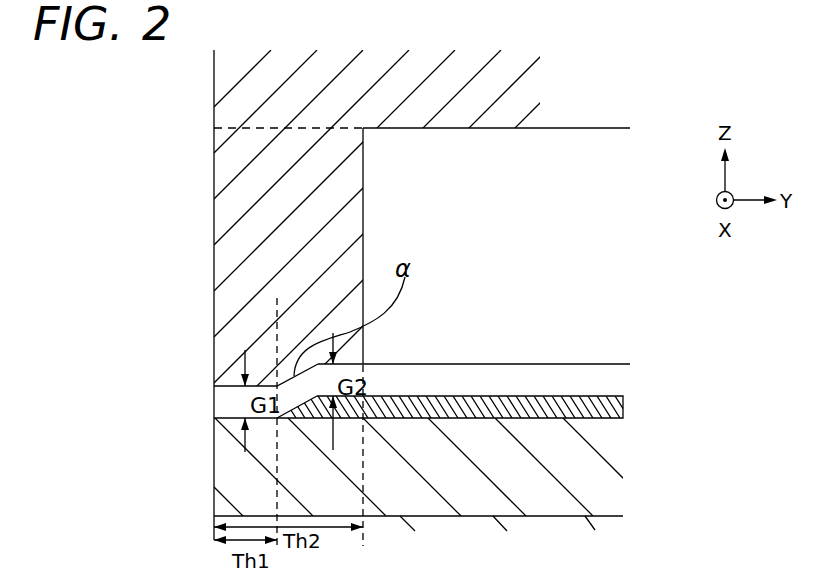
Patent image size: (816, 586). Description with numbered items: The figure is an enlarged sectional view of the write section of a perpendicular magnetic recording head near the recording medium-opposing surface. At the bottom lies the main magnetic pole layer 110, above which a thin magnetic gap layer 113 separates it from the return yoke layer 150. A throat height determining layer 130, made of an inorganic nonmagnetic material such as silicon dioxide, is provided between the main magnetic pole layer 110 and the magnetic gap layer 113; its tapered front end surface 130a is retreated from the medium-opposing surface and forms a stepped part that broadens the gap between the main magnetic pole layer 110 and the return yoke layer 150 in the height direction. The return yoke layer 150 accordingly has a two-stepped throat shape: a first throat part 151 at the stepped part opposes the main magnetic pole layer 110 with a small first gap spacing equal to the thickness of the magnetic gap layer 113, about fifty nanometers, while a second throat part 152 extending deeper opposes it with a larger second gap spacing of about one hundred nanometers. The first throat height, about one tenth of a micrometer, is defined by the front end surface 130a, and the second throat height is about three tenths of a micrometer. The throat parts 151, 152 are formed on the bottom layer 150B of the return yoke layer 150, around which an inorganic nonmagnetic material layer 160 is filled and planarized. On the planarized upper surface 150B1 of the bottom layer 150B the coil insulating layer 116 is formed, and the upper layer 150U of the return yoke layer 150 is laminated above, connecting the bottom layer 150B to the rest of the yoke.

The return yoke layer 150 is at (230, 278).
The upper layer 150U is at (220, 96).
The upper surface 150B1 is at (214, 128).
The bottom layer 150B is at (226, 189).
The coil insulating layer 116 is at (598, 92).
The inorganic nonmagnetic material layer 160 is at (595, 262).
The second throat part 152 is at (338, 336).
The first throat part 151 is at (225, 363).
The magnetic gap layer 113 is at (226, 400).
The main magnetic pole layer 110 is at (226, 461).
The throat height determining layer 130 is at (463, 400).
The front end surface 130a is at (300, 408).